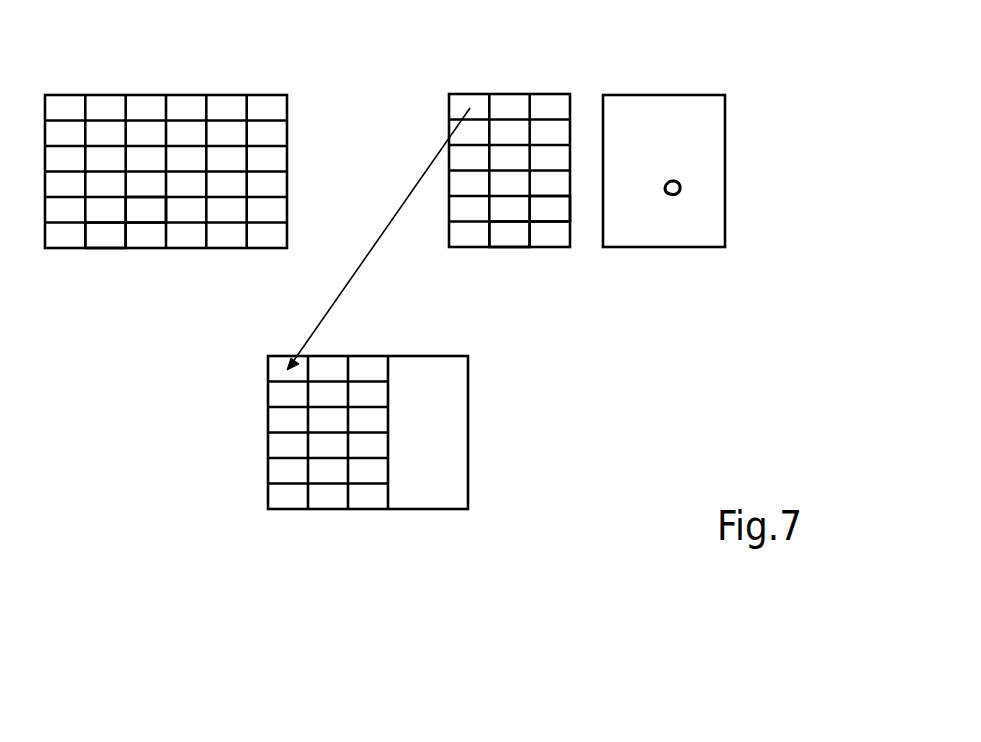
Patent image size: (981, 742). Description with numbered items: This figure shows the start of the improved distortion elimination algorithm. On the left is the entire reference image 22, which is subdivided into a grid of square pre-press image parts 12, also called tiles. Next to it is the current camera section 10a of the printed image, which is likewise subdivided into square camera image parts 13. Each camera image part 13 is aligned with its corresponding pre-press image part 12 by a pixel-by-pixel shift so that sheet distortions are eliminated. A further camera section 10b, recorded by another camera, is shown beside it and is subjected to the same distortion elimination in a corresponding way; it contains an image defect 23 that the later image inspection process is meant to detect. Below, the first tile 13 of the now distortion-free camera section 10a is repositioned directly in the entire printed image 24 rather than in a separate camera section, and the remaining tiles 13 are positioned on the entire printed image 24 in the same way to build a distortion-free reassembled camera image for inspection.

The reference image 22 is at (62, 94).
The square pre-press image part 12 is at (147, 212).
The current camera section 10a is at (508, 94).
The camera image part 13 is at (563, 213).
The further camera section 10b is at (660, 94).
The image defect 23 is at (680, 184).
The entire printed image 24 is at (470, 430).